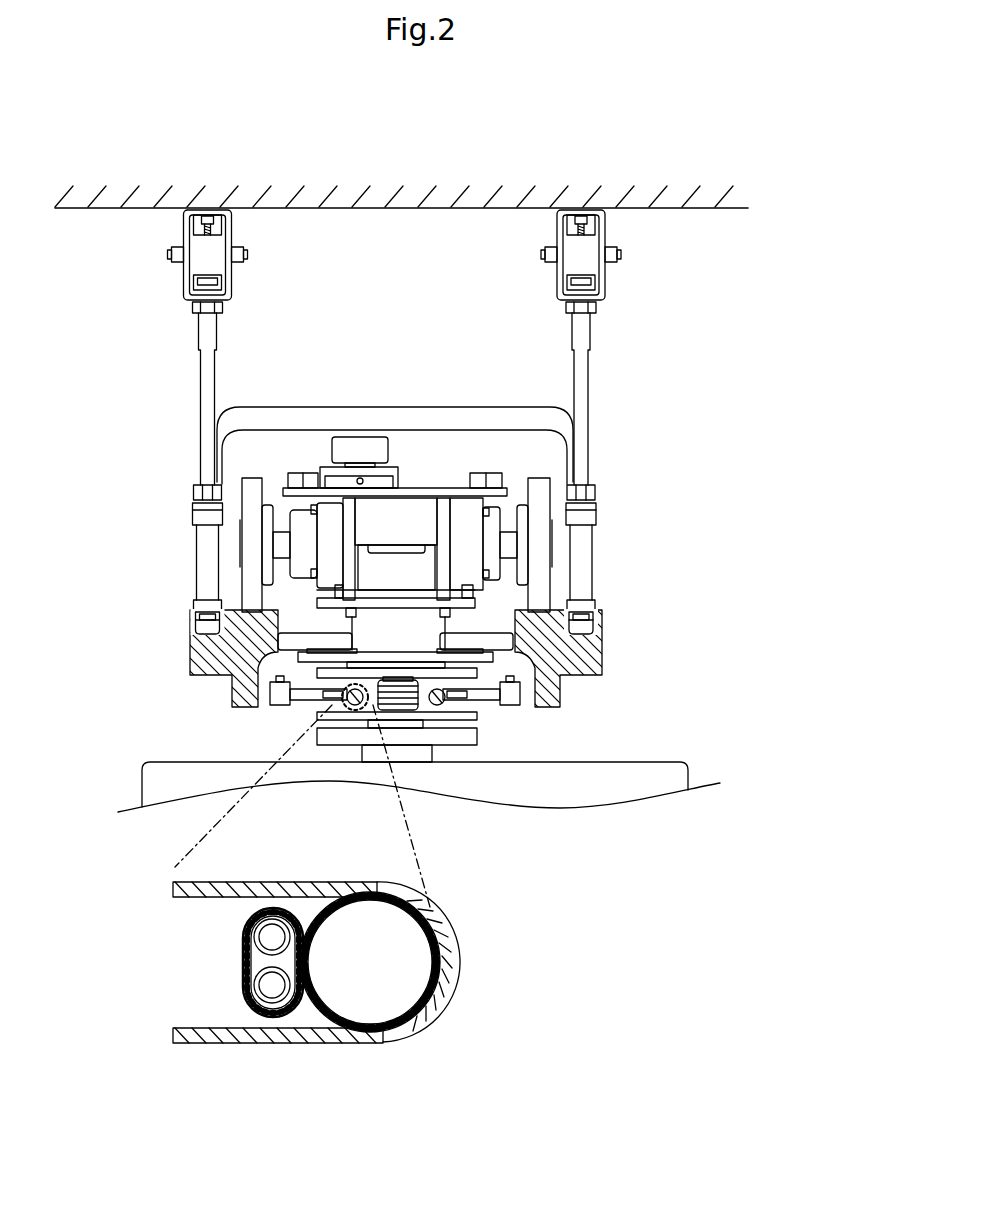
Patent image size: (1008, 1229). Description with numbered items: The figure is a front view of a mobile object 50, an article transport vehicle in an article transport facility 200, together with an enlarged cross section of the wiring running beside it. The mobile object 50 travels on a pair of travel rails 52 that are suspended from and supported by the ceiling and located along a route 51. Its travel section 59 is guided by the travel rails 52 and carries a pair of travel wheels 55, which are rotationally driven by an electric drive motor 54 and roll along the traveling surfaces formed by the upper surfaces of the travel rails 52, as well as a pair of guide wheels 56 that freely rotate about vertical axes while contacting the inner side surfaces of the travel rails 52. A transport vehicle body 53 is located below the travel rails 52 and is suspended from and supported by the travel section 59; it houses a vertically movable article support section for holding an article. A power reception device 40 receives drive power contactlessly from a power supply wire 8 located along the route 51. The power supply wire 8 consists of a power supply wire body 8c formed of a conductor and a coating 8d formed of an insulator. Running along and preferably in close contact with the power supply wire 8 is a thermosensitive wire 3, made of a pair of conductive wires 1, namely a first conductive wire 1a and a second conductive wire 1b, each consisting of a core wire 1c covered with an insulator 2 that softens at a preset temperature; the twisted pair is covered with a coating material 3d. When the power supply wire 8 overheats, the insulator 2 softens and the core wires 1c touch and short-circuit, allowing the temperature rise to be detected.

The article transport facility 200 is at (740, 148).
The mobile object 50 is at (705, 452).
The travel section 59 is at (430, 457).
The drive motor 54 is at (277, 507).
The travel wheels 55 is at (248, 545).
The guide wheels 56 is at (487, 636).
The travel rails 52 is at (190, 640).
The route 51 is at (603, 640).
The power reception device 40 is at (422, 698).
The transport vehicle body 53 is at (672, 770).
The power supply wire 8 is at (378, 879).
The power supply wire body 8c is at (410, 995).
The coating 8d is at (402, 1030).
The thermosensitive wire 3 is at (221, 957).
The coating material 3d is at (268, 900).
The insulator 2 is at (245, 976).
The core wire 1c is at (262, 930).
The conductive wires 1 is at (287, 962).
The first conductive wire 1a is at (288, 906).
The second conductive wire 1b is at (297, 1015).